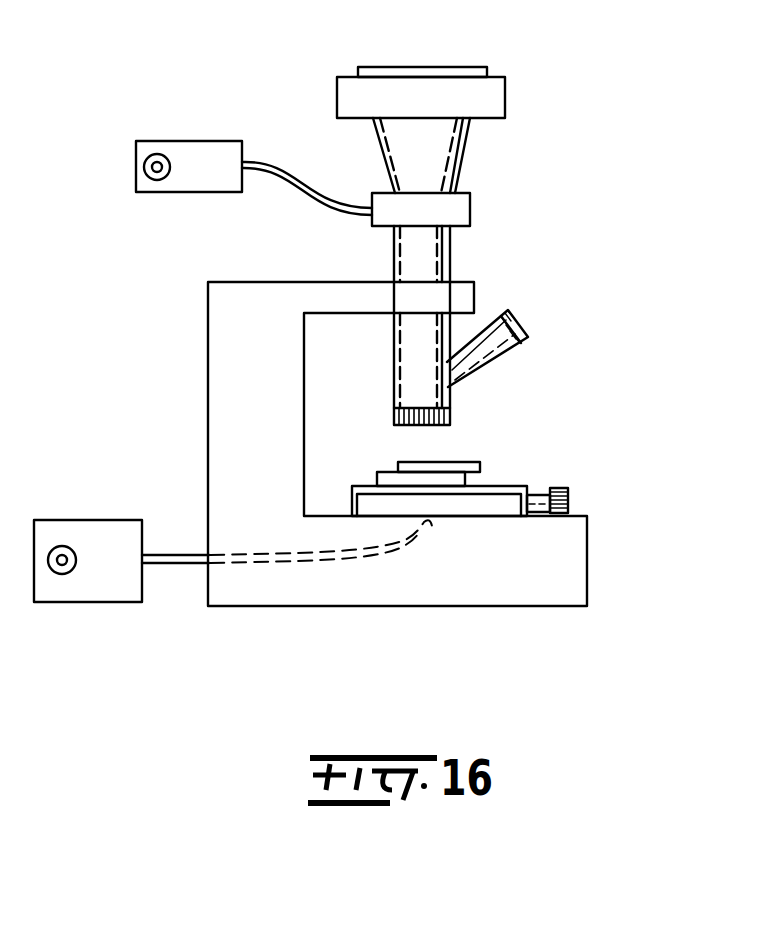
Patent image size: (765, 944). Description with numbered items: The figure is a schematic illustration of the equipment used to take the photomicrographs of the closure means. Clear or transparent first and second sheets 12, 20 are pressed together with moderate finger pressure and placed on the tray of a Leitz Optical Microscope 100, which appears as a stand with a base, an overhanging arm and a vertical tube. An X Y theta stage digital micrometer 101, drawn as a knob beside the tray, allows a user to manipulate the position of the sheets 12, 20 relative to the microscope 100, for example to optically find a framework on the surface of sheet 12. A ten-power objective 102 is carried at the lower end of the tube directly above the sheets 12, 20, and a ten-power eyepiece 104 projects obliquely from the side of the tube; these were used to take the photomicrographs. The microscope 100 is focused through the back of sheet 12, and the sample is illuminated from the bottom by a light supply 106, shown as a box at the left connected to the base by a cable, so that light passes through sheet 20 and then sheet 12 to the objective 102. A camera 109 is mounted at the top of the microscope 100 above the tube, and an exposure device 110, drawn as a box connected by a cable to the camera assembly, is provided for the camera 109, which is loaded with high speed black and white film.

The Leitz Optical Microscope 100 is at (532, 607).
The X Y theta stage digital micrometer 101 is at (570, 492).
The 10× objective 102 is at (454, 418).
The 10× eyepiece 104 is at (507, 305).
The light supply 106 is at (78, 603).
The camera 109 is at (426, 67).
The exposure device 110 is at (152, 138).
The first sheet 12 is at (487, 468).
The second sheet 20 is at (388, 472).